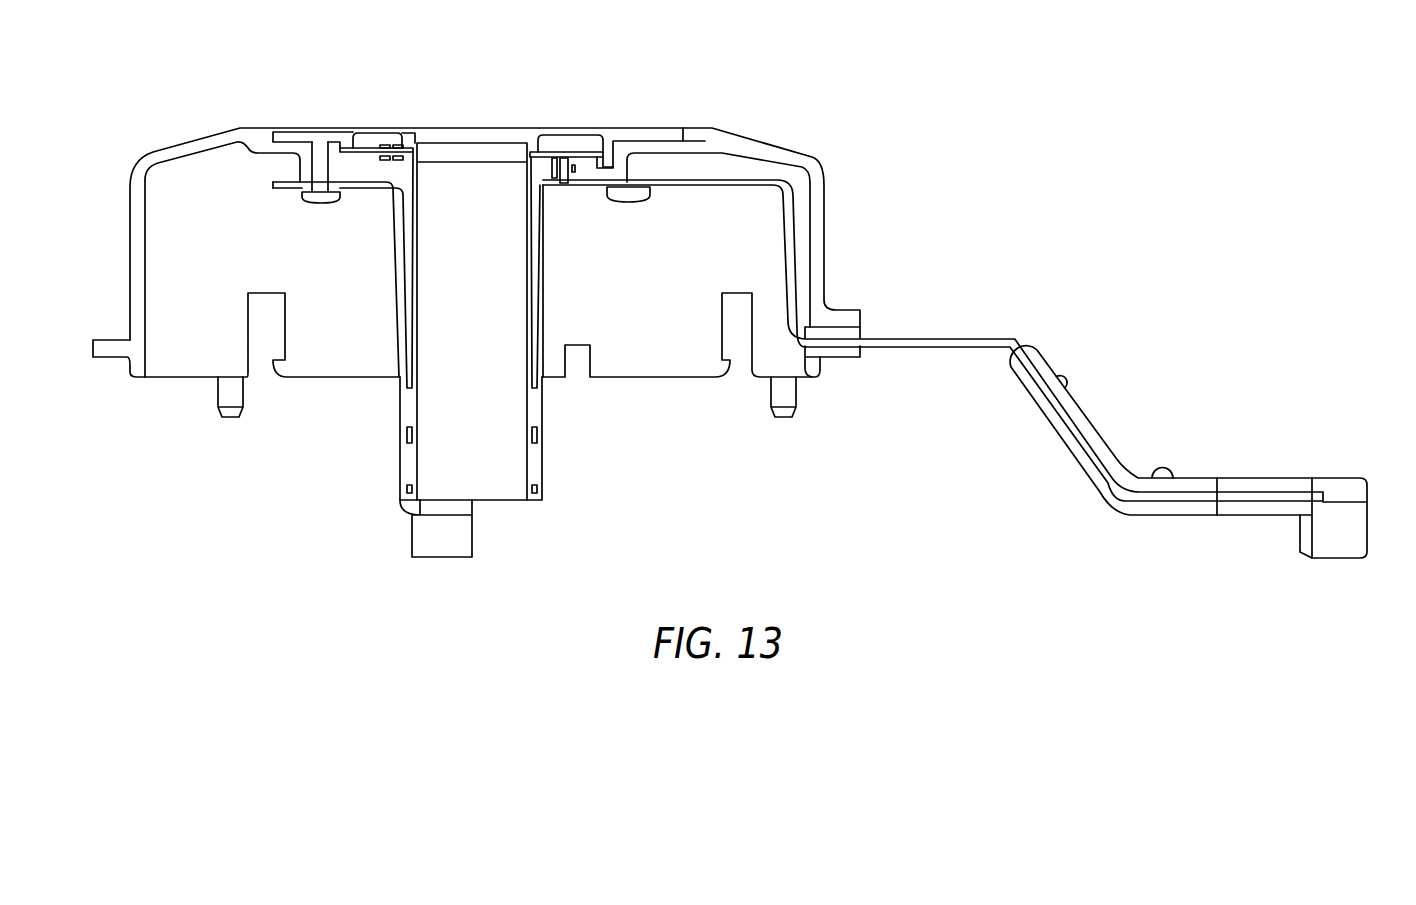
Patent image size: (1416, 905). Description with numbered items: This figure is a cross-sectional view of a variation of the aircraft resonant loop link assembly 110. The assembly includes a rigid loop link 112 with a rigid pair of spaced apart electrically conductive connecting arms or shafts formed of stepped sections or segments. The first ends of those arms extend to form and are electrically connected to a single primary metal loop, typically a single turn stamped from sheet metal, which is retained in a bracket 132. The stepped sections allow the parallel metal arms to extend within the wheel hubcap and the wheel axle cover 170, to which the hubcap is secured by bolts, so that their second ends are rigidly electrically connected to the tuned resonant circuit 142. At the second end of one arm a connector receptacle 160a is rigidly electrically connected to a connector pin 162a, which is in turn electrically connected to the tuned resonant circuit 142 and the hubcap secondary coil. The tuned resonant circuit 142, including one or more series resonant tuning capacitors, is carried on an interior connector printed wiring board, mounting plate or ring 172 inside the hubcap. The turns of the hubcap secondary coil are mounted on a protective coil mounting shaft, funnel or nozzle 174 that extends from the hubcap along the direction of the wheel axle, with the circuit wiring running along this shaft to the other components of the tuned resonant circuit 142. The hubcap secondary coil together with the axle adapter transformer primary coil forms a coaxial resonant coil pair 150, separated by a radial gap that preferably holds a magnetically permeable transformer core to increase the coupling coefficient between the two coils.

The resonant loop link assembly 110 is at (912, 338).
The rigid loop link 112 is at (1020, 348).
The bracket 132 is at (1333, 477).
The tuned resonant circuit 142 is at (410, 325).
The coaxial resonant coil pair 150 is at (538, 432).
The connector receptacle 160a is at (571, 156).
The connector pin 162a is at (567, 183).
The wheel axle cover 170 is at (766, 146).
The interior connector printed wiring board, mounting plate or ring 172 is at (368, 150).
The protective coil mounting shaft, funnel or nozzle 174 is at (405, 430).